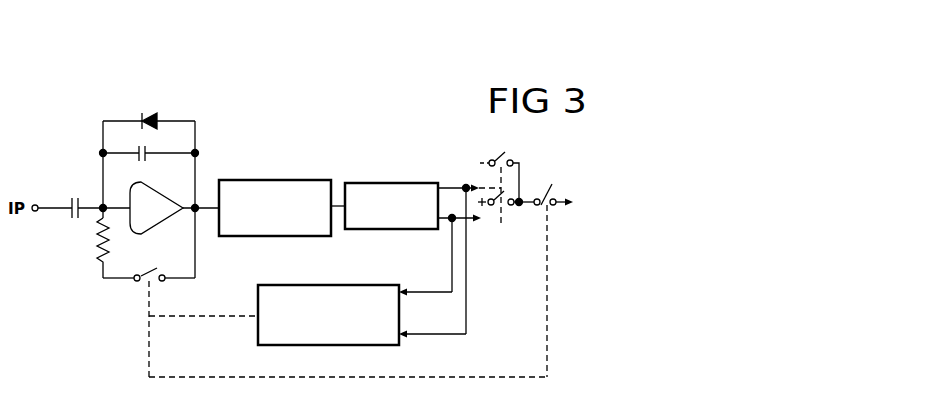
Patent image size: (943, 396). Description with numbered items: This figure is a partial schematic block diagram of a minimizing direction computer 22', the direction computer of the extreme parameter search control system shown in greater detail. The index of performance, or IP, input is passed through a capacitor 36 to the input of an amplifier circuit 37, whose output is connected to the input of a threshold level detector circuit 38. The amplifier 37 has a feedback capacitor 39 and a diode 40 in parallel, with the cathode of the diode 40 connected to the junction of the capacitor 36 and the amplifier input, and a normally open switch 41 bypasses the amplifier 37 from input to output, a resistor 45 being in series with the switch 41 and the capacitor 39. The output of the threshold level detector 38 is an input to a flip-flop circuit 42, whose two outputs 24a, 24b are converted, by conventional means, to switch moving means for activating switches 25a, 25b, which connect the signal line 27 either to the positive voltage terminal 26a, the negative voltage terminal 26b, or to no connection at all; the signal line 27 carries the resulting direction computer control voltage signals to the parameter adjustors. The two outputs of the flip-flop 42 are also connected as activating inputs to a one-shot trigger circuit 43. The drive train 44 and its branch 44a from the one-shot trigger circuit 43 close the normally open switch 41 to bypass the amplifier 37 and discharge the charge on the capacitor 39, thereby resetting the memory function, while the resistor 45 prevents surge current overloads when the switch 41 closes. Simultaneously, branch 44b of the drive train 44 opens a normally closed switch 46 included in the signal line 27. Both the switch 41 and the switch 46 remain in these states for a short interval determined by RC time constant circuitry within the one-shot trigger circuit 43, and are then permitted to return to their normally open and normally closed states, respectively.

The minimizing direction computer 22' is at (428, 124).
The output means 24a is at (485, 221).
The output means 24b is at (497, 177).
The switching device 25a is at (506, 204).
The switching device 25b is at (508, 156).
The positive voltage terminal 26a is at (495, 206).
The negative voltage terminal 26b is at (498, 159).
The signal line 27 is at (570, 194).
The capacitor 36 is at (70, 199).
The amplifier circuit 37 is at (162, 221).
The threshold level detector circuit 38 is at (293, 180).
The feedback capacitor 39 is at (149, 150).
The diode 40 is at (152, 115).
The normally open switch 41 is at (158, 271).
The flip-flop circuit 42 is at (427, 183).
The one-shot trigger circuit 43 is at (377, 283).
The drive train 44 is at (199, 311).
The branch 44a is at (146, 299).
The branch 44b is at (207, 375).
The resistor 45 is at (98, 240).
The normally closed switch 46 is at (550, 186).